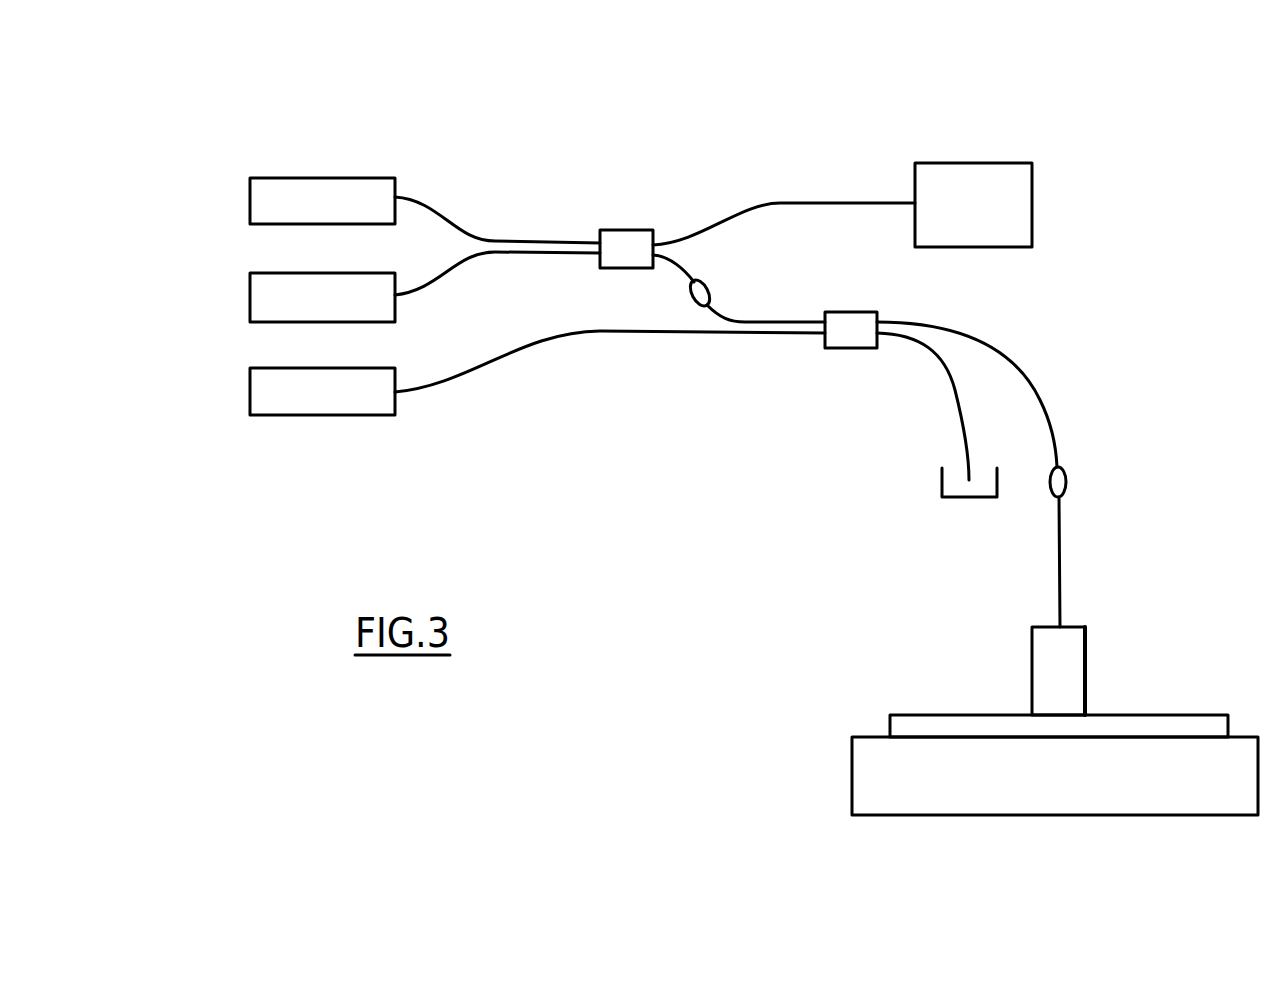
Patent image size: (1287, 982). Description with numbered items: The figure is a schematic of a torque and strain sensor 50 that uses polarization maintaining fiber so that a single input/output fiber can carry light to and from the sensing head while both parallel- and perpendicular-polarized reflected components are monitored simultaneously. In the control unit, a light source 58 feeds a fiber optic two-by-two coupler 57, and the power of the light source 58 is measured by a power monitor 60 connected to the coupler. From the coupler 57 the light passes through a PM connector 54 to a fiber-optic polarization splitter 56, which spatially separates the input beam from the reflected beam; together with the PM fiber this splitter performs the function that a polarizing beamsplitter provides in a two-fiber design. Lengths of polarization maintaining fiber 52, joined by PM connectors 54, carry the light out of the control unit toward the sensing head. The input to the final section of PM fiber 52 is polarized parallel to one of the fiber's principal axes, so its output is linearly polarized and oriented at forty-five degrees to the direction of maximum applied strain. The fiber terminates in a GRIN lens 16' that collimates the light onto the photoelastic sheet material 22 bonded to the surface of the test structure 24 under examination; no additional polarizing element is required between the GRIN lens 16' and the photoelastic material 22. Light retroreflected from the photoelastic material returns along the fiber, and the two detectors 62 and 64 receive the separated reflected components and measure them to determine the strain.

The sensor 50 is at (855, 122).
The light source 58 is at (343, 177).
The detector 62 is at (250, 293).
The detector 64 is at (250, 387).
The fiber optic 2×2 coupler 57 is at (640, 230).
The power monitor 60 is at (1033, 190).
The PM connector 54 is at (712, 297).
The fiber-optic polarization splitter 56 is at (855, 349).
The polarization maintaining fiber 52 is at (1050, 413).
The GRIN lens 16' is at (1092, 671).
The photoelastic sheet material 22 is at (1196, 725).
The test structure 24 is at (1102, 798).